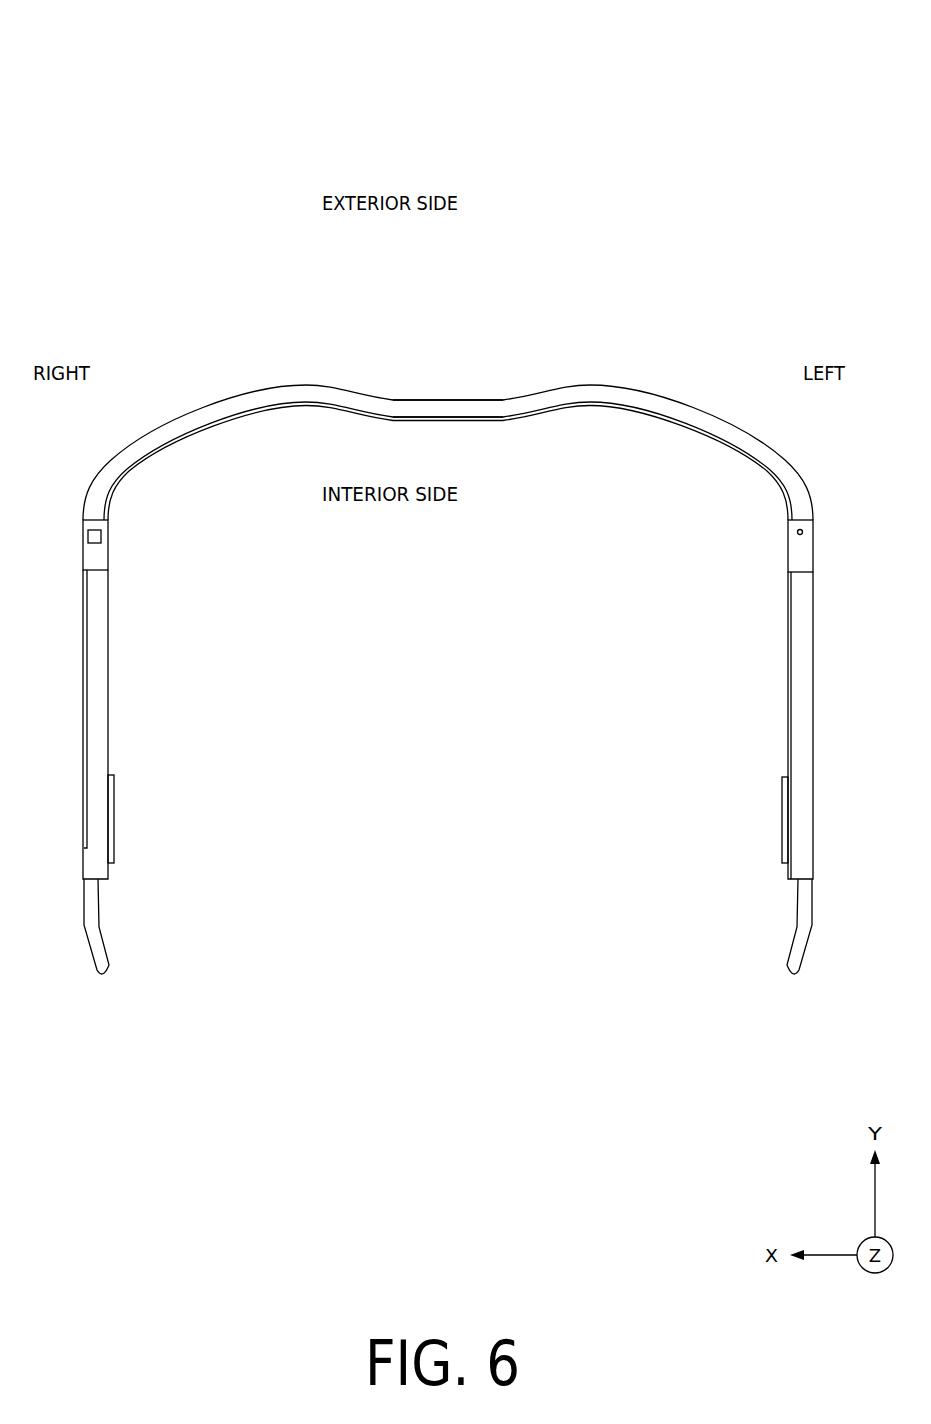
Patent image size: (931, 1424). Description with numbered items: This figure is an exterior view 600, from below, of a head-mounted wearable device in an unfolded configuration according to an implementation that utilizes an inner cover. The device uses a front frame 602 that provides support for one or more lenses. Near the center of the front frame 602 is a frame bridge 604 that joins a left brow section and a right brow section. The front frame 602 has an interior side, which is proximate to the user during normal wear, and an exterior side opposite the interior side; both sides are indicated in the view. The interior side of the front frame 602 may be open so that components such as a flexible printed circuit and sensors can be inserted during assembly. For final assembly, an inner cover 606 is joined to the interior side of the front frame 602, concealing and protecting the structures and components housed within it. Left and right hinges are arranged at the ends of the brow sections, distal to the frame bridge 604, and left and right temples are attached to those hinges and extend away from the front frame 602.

The exterior view 600 is at (727, 54).
The front frame 602 is at (258, 388).
The frame bridge 604 is at (503, 373).
The inner cover 606 is at (722, 442).